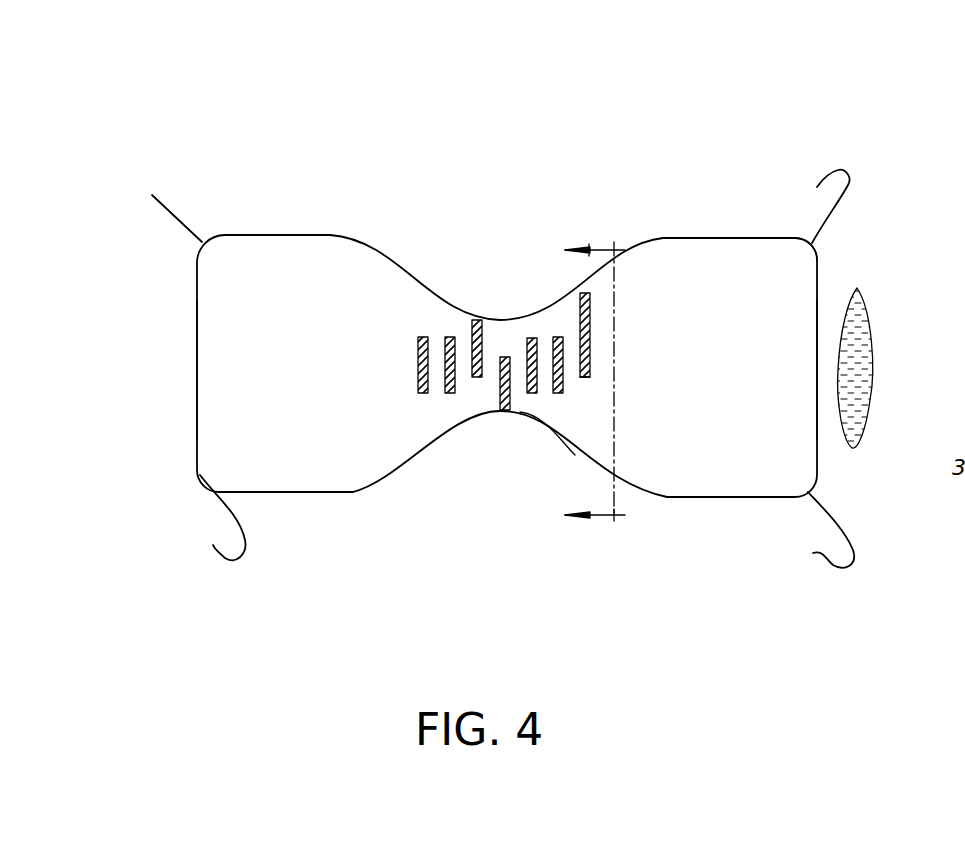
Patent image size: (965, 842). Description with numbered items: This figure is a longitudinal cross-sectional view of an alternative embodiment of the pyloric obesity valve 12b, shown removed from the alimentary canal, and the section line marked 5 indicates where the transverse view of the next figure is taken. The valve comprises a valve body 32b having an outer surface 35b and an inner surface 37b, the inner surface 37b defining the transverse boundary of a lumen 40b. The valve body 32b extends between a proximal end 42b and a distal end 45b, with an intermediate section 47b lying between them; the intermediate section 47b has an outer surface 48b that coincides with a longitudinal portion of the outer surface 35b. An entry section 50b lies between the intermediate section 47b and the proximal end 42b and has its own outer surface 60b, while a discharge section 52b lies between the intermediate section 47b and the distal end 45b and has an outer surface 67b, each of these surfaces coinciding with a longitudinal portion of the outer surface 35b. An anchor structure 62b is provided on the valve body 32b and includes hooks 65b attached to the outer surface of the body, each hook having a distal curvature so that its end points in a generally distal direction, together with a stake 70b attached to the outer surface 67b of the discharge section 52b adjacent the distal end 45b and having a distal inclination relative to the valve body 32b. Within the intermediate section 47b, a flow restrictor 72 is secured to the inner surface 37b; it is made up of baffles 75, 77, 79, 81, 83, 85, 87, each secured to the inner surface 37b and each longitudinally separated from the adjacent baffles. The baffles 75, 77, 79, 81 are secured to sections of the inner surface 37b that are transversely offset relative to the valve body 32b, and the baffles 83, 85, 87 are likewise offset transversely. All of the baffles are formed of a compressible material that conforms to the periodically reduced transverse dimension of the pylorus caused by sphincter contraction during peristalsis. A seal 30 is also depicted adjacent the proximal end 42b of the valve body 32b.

The stake 70b is at (167, 195).
The anchor structure 62b is at (205, 228).
The outer surface 35b is at (348, 243).
The baffle 85 is at (447, 365).
The baffle 81 is at (506, 356).
The flow restrictor 72 is at (546, 360).
The baffle 77 is at (571, 372).
The pyloric obesity valve 12b is at (680, 230).
The proximal end 42b is at (818, 278).
The discharge section 52b is at (282, 348).
The distal end 45b is at (195, 320).
The inner surface 37b is at (262, 378).
The baffle 87 is at (418, 362).
The entry section 50b is at (748, 360).
The seal 30 is at (863, 387).
The lumen 40b is at (680, 400).
The hooks 65b is at (228, 515).
The baffle 83 is at (467, 413).
The baffle 79 is at (515, 398).
The baffle 75 is at (580, 395).
The intermediate section 47b is at (488, 425).
The outer surface of intermediate section 48b is at (549, 410).
The valve body 32b is at (698, 477).
The outer surface of entry section 60b is at (763, 497).
The outer surface of discharge section 67b is at (293, 493).
The section line 5- 5 is at (594, 385).